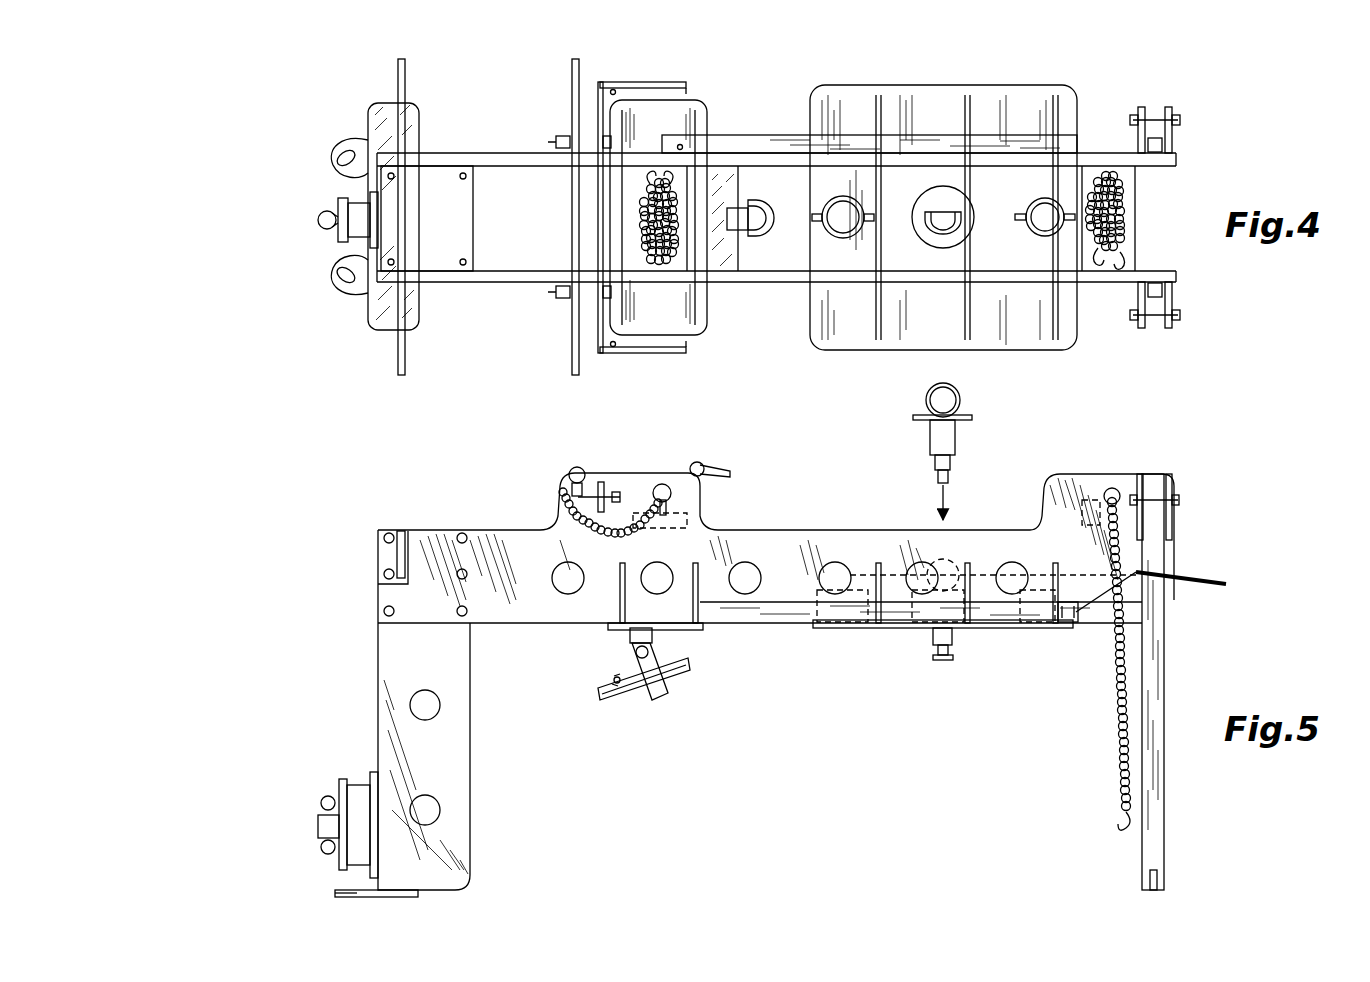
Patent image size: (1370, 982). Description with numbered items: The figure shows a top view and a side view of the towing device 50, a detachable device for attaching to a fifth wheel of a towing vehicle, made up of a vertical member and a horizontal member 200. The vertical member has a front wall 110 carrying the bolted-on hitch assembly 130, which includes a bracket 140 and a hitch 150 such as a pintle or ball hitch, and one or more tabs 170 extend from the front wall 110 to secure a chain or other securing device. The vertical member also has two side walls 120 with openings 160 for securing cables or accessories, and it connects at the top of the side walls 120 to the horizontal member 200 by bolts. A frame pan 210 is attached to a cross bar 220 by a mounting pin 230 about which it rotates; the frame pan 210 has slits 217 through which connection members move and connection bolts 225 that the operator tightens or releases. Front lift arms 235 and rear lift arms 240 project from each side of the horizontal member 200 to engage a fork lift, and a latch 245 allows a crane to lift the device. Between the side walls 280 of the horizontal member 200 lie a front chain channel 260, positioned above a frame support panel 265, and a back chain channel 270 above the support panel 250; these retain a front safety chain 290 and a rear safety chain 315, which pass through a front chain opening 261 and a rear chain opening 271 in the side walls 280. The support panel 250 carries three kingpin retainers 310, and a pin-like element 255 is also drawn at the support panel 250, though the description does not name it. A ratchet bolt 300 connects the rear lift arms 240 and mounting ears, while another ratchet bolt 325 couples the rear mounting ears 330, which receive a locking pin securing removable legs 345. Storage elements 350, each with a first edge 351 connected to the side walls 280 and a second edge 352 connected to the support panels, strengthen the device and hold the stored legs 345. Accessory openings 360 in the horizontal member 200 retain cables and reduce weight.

In FIG. 5, the towing device 50 is at (440, 528).
In FIG. 5, the front wall 110 is at (378, 645).
In FIG. 5, the side walls 120 is at (426, 758).
In FIG. 4, the hitch assembly 130 is at (270, 180).
In FIG. 4, the bracket 140 is at (358, 232).
In FIG. 5, the bracket 140 is at (357, 790).
In FIG. 4, the hitch 150 is at (320, 215).
In FIG. 5, the hitch 150 is at (322, 797).
In FIG. 5, the openings 160 is at (432, 812).
In FIG. 4, the tabs 170 is at (331, 158).
In FIG. 5, the tabs 170 is at (346, 898).
In FIG. 5, the horizontal member 200 is at (766, 470).
In FIG. 4, the frame pan 210 is at (648, 350).
In FIG. 5, the frame pan 210 is at (660, 690).
In FIG. 4, the slits 217 is at (615, 88).
In FIG. 5, the cross bar 220 is at (630, 633).
In FIG. 5, the connection bolts 225 is at (614, 680).
In FIG. 5, the mounting pin 230 is at (658, 646).
In FIG. 4, the front lift arms 235 is at (397, 80).
In FIG. 5, the front lift arms 235 is at (396, 560).
In FIG. 4, the rear lift arms 240 is at (571, 80).
In FIG. 5, the rear lift arms 240 is at (575, 468).
In FIG. 4, the latch 245 is at (750, 200).
In FIG. 5, the latch 245 is at (703, 463).
In FIG. 4, the support panel 250 is at (943, 217).
In FIG. 4, the locking pin 255 is at (941, 198).
In FIG. 5, the locking pin 255 is at (930, 437).
In FIG. 4, the front chain channel 260 is at (680, 255).
In FIG. 5, the front chain channel 260 is at (700, 515).
In FIG. 5, the front chain opening 261 is at (665, 485).
In FIG. 4, the frame support panel 265 is at (658, 217).
In FIG. 4, the back chain channel 270 is at (1140, 248).
In FIG. 5, the back chain channel 270 is at (1098, 522).
In FIG. 5, the rear chain opening 271 is at (1112, 488).
In FIG. 4, the side walls 280 is at (507, 158).
In FIG. 5, the side walls 280 is at (806, 541).
In FIG. 4, the front safety chain 290 is at (640, 232).
In FIG. 5, the front safety chain 290 is at (618, 540).
In FIG. 5, the ratchet bolt 300 is at (601, 490).
In FIG. 4, the kingpin retainers 310 is at (845, 198).
In FIG. 4, the rear safety chain 315 is at (1130, 210).
In FIG. 4, the ratchet bolt 325 is at (1155, 108).
In FIG. 5, the ratchet bolt 325 is at (1140, 490).
In FIG. 4, the rear mounting ears 330 is at (1172, 112).
In FIG. 5, the rear mounting ears 330 is at (1168, 490).
In FIG. 4, the legs 345 is at (722, 143).
In FIG. 5, the legs 345 is at (760, 608).
In FIG. 5, the storage elements 350 is at (880, 568).
In FIG. 5, the first edge 351 is at (1077, 622).
In FIG. 4, the second edge 352 is at (973, 310).
In FIG. 5, the accessory openings 360 is at (835, 568).